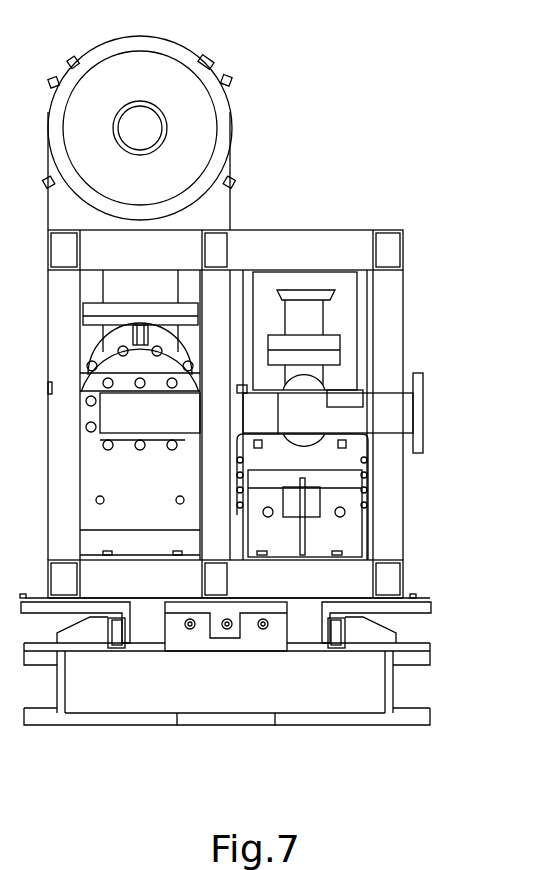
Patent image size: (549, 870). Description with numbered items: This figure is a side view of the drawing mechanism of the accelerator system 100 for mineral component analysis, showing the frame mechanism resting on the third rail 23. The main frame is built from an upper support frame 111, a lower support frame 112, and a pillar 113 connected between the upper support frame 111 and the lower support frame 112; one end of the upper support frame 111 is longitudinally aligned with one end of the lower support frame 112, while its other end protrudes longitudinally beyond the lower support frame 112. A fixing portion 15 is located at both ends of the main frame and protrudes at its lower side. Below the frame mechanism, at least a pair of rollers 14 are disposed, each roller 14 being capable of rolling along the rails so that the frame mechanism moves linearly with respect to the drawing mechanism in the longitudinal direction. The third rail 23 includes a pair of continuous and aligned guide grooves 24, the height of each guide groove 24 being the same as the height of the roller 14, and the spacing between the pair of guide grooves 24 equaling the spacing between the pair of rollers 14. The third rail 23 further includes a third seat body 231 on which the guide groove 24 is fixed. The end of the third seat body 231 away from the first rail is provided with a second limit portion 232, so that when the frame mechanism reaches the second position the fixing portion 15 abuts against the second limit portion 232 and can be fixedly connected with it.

The accelerator system 100 is at (187, 50).
The upper support frame 111 is at (385, 245).
The lower support frame 112 is at (386, 581).
The pillar 113 is at (388, 491).
The fixing portion 15 is at (234, 612).
The second limit portion 232 is at (254, 645).
The third seat body 231 is at (370, 698).
The third rail 23 is at (413, 685).
The guide groove 24 is at (110, 642).
The roller 14 is at (115, 632).